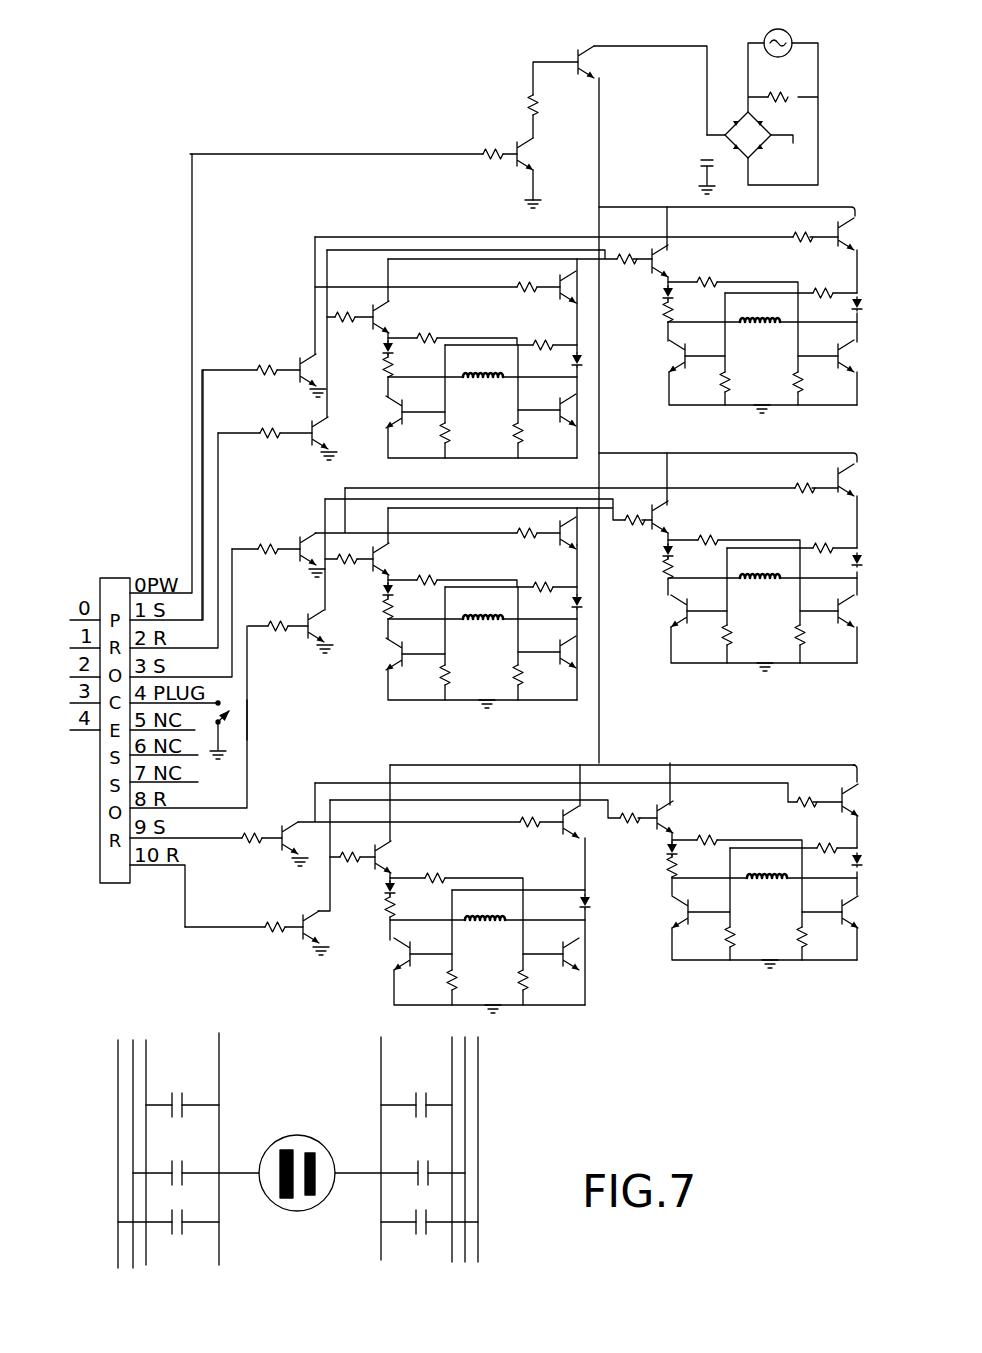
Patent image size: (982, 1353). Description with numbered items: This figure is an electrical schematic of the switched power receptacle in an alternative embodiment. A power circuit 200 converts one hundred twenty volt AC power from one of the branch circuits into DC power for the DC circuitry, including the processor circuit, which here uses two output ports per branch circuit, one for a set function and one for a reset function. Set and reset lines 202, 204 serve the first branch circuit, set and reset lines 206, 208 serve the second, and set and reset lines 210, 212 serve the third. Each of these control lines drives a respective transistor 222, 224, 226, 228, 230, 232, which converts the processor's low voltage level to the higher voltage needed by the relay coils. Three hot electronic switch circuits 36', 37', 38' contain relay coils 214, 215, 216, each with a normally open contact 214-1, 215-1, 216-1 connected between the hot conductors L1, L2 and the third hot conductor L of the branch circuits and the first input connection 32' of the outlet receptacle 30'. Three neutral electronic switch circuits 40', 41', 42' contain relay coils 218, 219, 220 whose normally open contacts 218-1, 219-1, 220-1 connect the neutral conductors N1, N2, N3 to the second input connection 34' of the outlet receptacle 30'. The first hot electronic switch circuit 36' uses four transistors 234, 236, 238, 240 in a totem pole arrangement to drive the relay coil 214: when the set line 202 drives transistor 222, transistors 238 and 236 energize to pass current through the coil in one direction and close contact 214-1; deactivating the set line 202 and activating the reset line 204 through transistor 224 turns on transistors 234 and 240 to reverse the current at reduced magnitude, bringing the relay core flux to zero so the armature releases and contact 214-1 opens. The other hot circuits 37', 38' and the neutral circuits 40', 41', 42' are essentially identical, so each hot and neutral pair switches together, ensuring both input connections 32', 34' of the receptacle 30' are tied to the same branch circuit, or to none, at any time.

The power circuit 200 is at (502, 89).
The set line 202 is at (211, 367).
The reset line 204 is at (225, 432).
The set line 206 is at (245, 533).
The reset line 208 is at (250, 721).
The set line 210 is at (223, 842).
The reset line 212 is at (206, 928).
The relay coil 214 is at (482, 382).
The relay coil 215 is at (482, 628).
The relay coil 216 is at (487, 927).
The relay coil 218 is at (755, 332).
The relay coil 219 is at (760, 587).
The relay coil 220 is at (765, 886).
The transistor 222 is at (300, 352).
The transistor 224 is at (318, 433).
The transistor 226 is at (300, 535).
The transistor 228 is at (302, 640).
The transistor 230 is at (282, 822).
The transistor 232 is at (302, 942).
The transistor 234 is at (389, 312).
The transistor 236 is at (401, 424).
The transistor 238 is at (568, 288).
The transistor 240 is at (580, 407).
The first hot electronic switch circuit 36' is at (365, 374).
The second hot electronic switch circuit 37' is at (364, 611).
The third hot electronic switch circuit 38' is at (372, 945).
The first neutral electronic switch circuit 40' is at (733, 310).
The second neutral electronic switch circuit 41' is at (734, 562).
The third neutral electronic switch circuit 42' is at (728, 865).
The relay contact 218-1 is at (177, 1087).
The relay contact 219-1 is at (212, 1140).
The relay contact 220-1 is at (188, 1208).
The relay contact 214-1 is at (417, 1087).
The relay contact 215-1 is at (435, 1167).
The relay contact 216-1 is at (415, 1233).
The outlet receptacle 30' is at (310, 1191).
The first input connection 32' is at (333, 1149).
The second input connection 34' is at (273, 1147).
The neutral conductor N1 is at (148, 1268).
The neutral conductor N2 is at (133, 1277).
The neutral conductor N3 is at (118, 1273).
The hot conductor L is at (480, 1263).
The hot conductor L1 is at (453, 1272).
The hot conductor L2 is at (467, 1268).